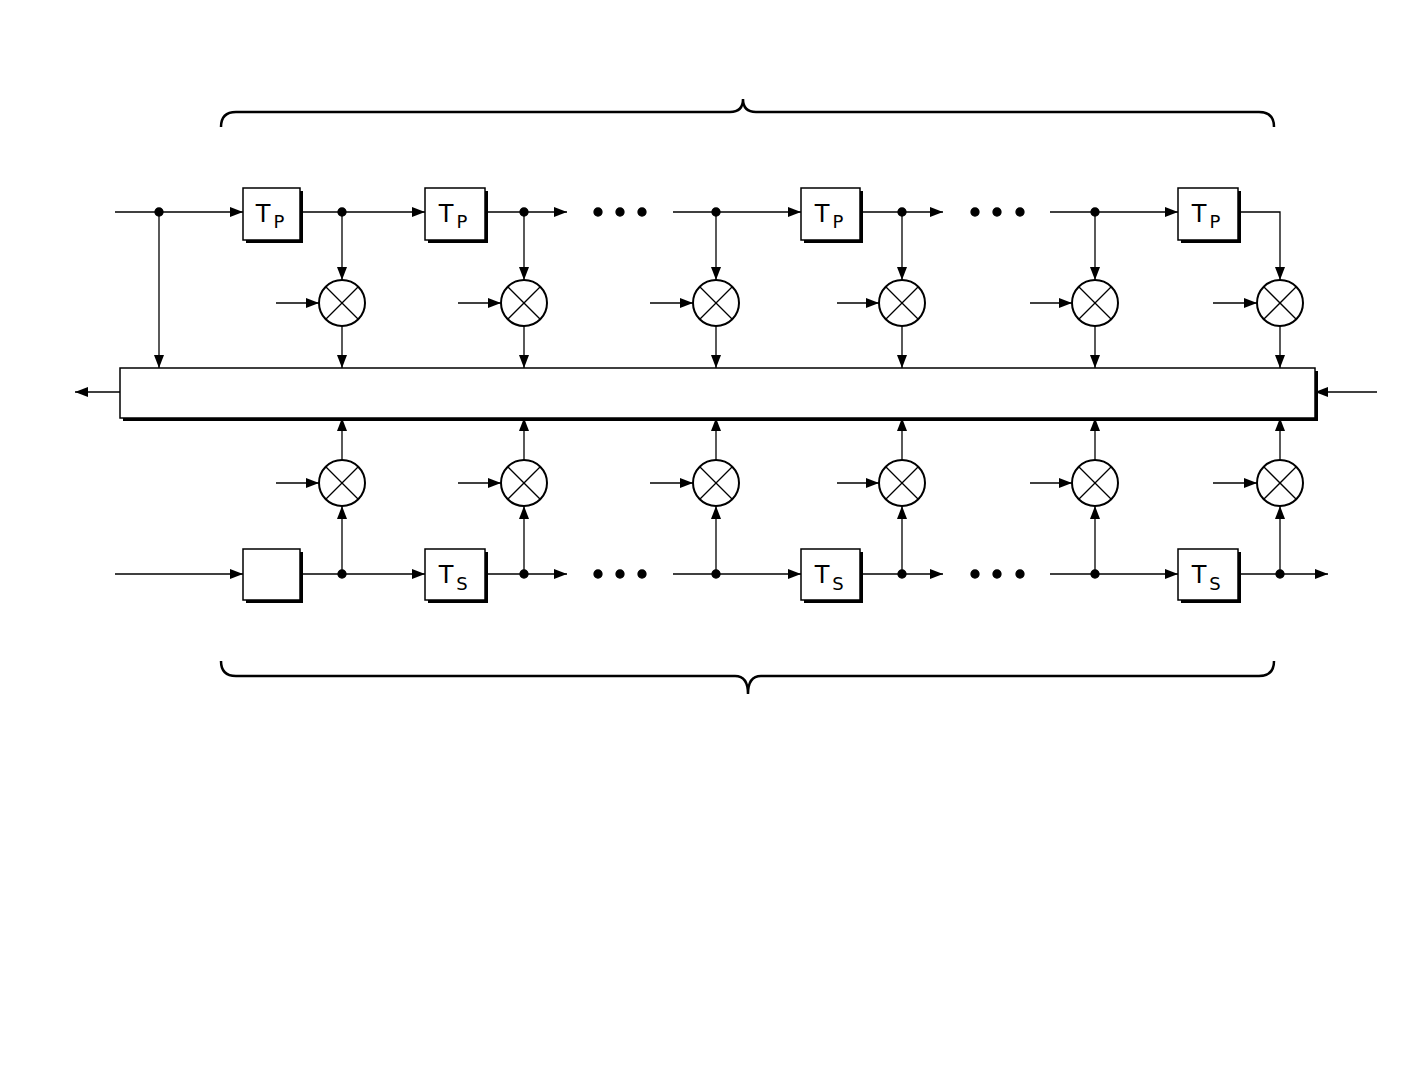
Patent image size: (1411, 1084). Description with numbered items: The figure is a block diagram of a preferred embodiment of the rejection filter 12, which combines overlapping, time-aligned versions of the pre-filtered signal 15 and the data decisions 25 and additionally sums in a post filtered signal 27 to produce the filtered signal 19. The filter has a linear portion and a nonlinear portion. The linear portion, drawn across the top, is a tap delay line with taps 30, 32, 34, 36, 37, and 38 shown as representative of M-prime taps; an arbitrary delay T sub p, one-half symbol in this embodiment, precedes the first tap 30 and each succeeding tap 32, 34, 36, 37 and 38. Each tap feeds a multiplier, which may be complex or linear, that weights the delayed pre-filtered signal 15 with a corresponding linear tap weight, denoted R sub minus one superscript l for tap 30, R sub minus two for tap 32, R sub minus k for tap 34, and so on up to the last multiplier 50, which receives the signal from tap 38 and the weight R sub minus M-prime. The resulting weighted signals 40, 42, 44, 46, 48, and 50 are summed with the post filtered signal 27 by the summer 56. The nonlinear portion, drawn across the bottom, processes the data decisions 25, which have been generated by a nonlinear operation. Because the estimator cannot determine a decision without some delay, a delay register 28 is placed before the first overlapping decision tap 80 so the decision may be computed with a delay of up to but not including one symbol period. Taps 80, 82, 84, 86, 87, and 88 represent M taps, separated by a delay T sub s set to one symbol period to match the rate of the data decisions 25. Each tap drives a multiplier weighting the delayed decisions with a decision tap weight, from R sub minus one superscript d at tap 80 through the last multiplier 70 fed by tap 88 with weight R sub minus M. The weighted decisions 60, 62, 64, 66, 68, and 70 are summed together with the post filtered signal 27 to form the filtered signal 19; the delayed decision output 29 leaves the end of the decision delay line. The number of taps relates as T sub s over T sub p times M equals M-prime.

The rejection filter 12 is at (421, 752).
The pre-filtered signal 15 is at (165, 203).
The filtered signal 19 is at (97, 390).
The data decisions 25 is at (163, 578).
The post filtered signal 27 is at (1355, 390).
The delay register 28 is at (285, 605).
The delay line output 29 is at (1300, 573).
The tap 30 is at (337, 205).
The tap 32 is at (519, 205).
The tap 34 is at (711, 205).
The tap 36 is at (897, 205).
The tap 37 is at (1090, 205).
The tap 38 is at (1278, 207).
The weighted signal 40 is at (345, 344).
The weighted signal 42 is at (527, 344).
The weighted signal 44 is at (719, 344).
The weighted signal 46 is at (905, 344).
The weighted signal 48 is at (1098, 344).
The last multiplier 50 is at (1283, 344).
The summer 56 is at (1018, 405).
The weighted decision 60 is at (345, 441).
The weighted decision 62 is at (527, 441).
The weighted decision 64 is at (719, 441).
The weighted decision 66 is at (905, 441).
The weighted decision 68 is at (1098, 441).
The last multiplier 70 is at (1283, 441).
The first overlapping decision tap 80 is at (340, 580).
The tap 82 is at (522, 580).
The tap 84 is at (714, 580).
The tap 86 is at (900, 580).
The tap 87 is at (1093, 580).
The tap 88 is at (1278, 580).